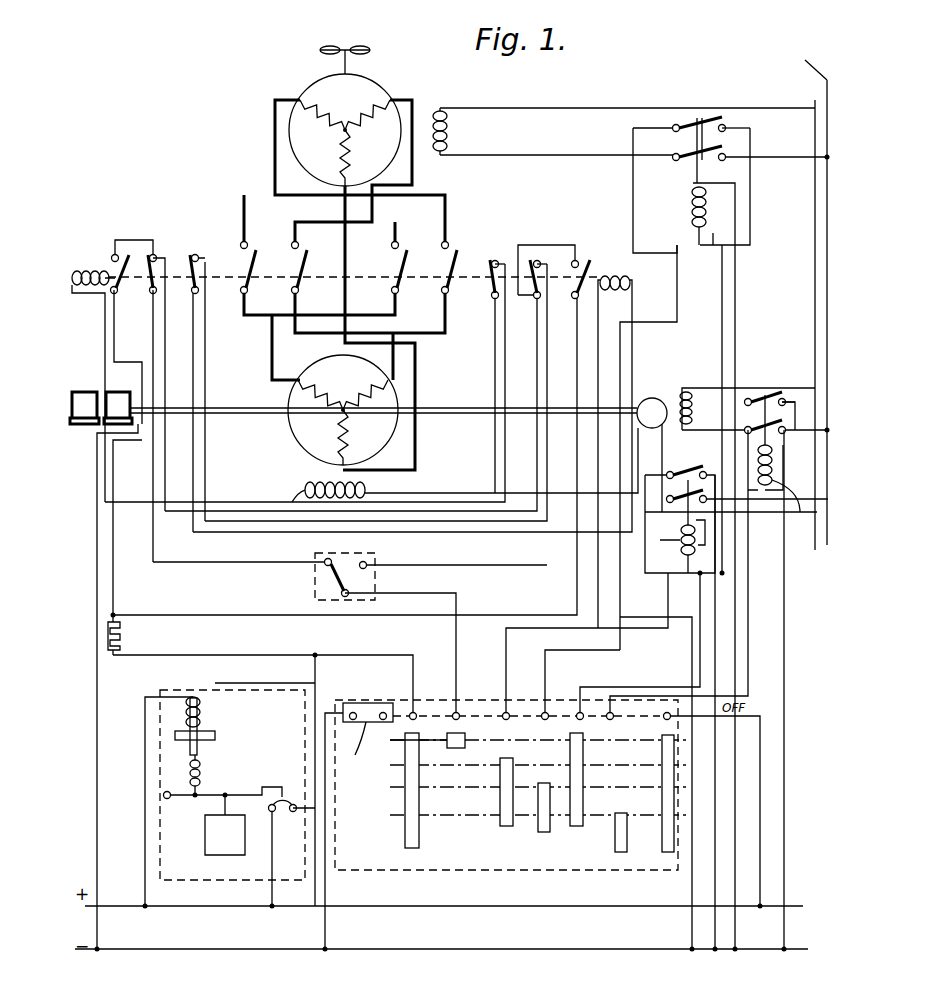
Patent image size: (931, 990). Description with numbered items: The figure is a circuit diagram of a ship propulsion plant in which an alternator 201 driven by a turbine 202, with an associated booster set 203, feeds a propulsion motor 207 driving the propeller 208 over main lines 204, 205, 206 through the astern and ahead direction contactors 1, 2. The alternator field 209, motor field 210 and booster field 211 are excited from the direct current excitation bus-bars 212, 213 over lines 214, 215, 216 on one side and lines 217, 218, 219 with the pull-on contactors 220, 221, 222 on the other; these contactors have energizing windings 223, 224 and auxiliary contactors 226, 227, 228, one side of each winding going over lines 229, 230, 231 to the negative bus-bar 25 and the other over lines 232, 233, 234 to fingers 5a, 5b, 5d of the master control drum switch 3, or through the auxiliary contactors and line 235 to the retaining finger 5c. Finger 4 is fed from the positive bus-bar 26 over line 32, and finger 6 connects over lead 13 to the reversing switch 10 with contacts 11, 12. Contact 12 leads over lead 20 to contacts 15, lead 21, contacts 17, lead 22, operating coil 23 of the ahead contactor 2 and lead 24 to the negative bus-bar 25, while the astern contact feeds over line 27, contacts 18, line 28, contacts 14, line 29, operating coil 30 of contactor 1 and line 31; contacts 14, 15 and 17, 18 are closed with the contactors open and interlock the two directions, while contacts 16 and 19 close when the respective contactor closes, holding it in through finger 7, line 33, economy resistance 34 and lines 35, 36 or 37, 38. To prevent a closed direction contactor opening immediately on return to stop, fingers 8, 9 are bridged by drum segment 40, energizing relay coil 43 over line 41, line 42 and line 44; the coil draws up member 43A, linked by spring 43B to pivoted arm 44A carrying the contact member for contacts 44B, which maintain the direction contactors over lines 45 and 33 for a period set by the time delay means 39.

The astern direction contactor 1 is at (349, 255).
The ahead direction contactor 2 is at (354, 255).
The master control drum switch 3 is at (475, 845).
The finger 4 is at (671, 713).
The finger 5a is at (510, 713).
The finger 5b is at (549, 713).
The finger 5c is at (584, 713).
The finger 5d is at (614, 713).
The finger 6 is at (460, 713).
The finger 7 is at (417, 713).
The finger 8 is at (411, 732).
The finger 9 is at (353, 720).
The reversing switch 10 is at (345, 600).
The reversing switch contact 11 is at (325, 570).
The reversing switch contact 12 is at (368, 563).
The lead 13 is at (458, 603).
The contacts 14 is at (493, 258).
The contacts 15 is at (533, 258).
The contacts 16 is at (585, 258).
The contacts 17 is at (200, 300).
The contacts 18 is at (160, 300).
The contacts 19 is at (120, 300).
The lead 20 is at (565, 344).
The lead 21 is at (195, 470).
The lead 22 is at (208, 434).
The operating coil 23 is at (615, 275).
The lead 24 is at (600, 320).
The negative bus-bar 25 is at (782, 945).
The positive bus-bar 26 is at (790, 906).
The line 27 is at (205, 564).
The line 28 is at (250, 500).
The line 29 is at (490, 462).
The operating coil 30 is at (97, 268).
The line 31 is at (97, 540).
The line 32 is at (762, 765).
The line 33 is at (262, 656).
The economy resistance 34 is at (122, 640).
The line 35 is at (585, 328).
The line 36 is at (545, 245).
The line 37 is at (113, 522).
The line 38 is at (136, 240).
The time delay means 39 is at (160, 866).
The drum segment 40 is at (359, 748).
The line 41 is at (327, 893).
The line 42 is at (383, 703).
The coil 43 is at (200, 710).
The member 43A is at (198, 745).
The spring 43B is at (172, 798).
The line 44 is at (143, 790).
The pivoted arm 44A is at (205, 795).
The contacts 44B is at (292, 853).
The line 45 is at (325, 787).
The alternator 201 is at (318, 385).
The turbine 202 is at (90, 426).
The booster set 203 is at (652, 398).
The line 204 is at (275, 352).
The line 205 is at (345, 285).
The line 206 is at (400, 363).
The motor 207 is at (375, 88).
The propeller 208 is at (352, 60).
The alternator field 209 is at (320, 486).
The motor field 210 is at (448, 130).
The booster field 211 is at (703, 408).
The excitation bus-bar 212 is at (812, 96).
The excitation bus-bar 213 is at (805, 289).
The line 214 is at (712, 108).
The line 215 is at (710, 375).
The line 216 is at (762, 500).
The line 217 is at (565, 155).
The line 218 is at (712, 405).
The line 219 is at (445, 445).
The generator field circuit contactor 220 is at (690, 505).
The motor field circuit contactor 221 is at (725, 145).
The booster field contactor 222 is at (772, 402).
The energizing winding 223 is at (677, 546).
The energizing winding 224 is at (708, 215).
The auxiliary contactor 226 is at (690, 460).
The auxiliary contactor 227 is at (690, 120).
The auxiliary contactor 228 is at (760, 395).
The line 229 is at (737, 300).
The line 230 is at (714, 643).
The line 231 is at (786, 670).
The line 232 is at (667, 576).
The line 233 is at (679, 275).
The line 234 is at (750, 570).
The line 235 is at (705, 612).